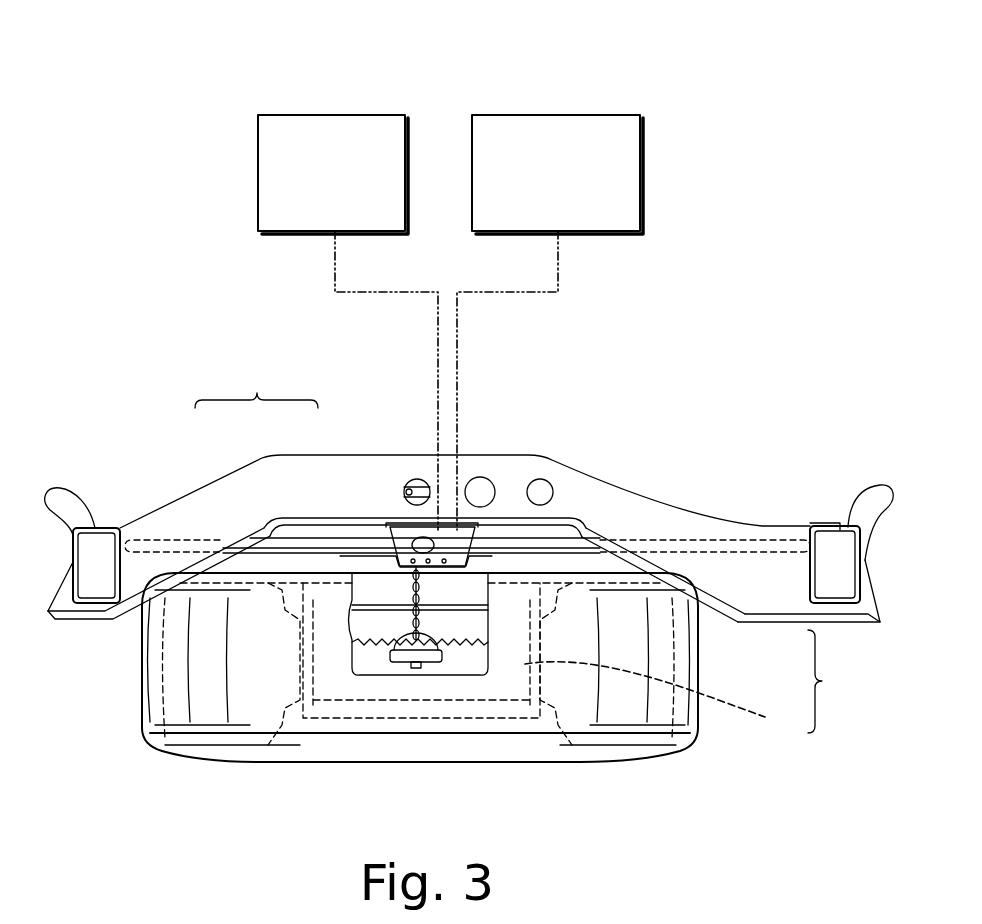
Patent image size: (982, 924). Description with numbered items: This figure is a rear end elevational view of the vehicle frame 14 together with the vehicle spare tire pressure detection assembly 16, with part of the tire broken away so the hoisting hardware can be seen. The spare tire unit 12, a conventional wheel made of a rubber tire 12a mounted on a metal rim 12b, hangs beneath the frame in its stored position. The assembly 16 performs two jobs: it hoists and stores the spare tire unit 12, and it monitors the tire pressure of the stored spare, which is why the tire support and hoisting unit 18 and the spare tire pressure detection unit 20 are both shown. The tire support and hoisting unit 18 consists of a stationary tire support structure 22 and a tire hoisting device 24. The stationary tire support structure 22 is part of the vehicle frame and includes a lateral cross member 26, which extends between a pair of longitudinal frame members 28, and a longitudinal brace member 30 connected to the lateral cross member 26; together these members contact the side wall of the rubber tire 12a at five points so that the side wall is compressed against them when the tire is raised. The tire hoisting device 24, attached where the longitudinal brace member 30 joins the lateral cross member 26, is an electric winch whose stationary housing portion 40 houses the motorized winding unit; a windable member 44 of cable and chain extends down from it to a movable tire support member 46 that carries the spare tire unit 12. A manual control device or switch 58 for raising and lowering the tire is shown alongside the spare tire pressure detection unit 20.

The spare tire unit 12 is at (831, 681).
The rubber tire 12a is at (705, 596).
The metal rim 12b is at (668, 696).
The vehicle frame 14 is at (88, 466).
The vehicle spare tire pressure detection assembly 16 is at (466, 664).
The tire support and hoisting unit 18 is at (237, 362).
The spare tire pressure detection unit 20 is at (322, 114).
The stationary tire support structure 22 is at (256, 386).
The tire hoisting device 24 is at (368, 530).
The lateral cross member 26 is at (197, 492).
The longitudinal frame members 28 is at (96, 527).
The longitudinal brace member 30 is at (380, 563).
The stationary housing portion 40 is at (514, 530).
The windable member 44 is at (365, 650).
The movable tire support member 46 is at (405, 668).
The manual control device or switch 58 is at (553, 114).